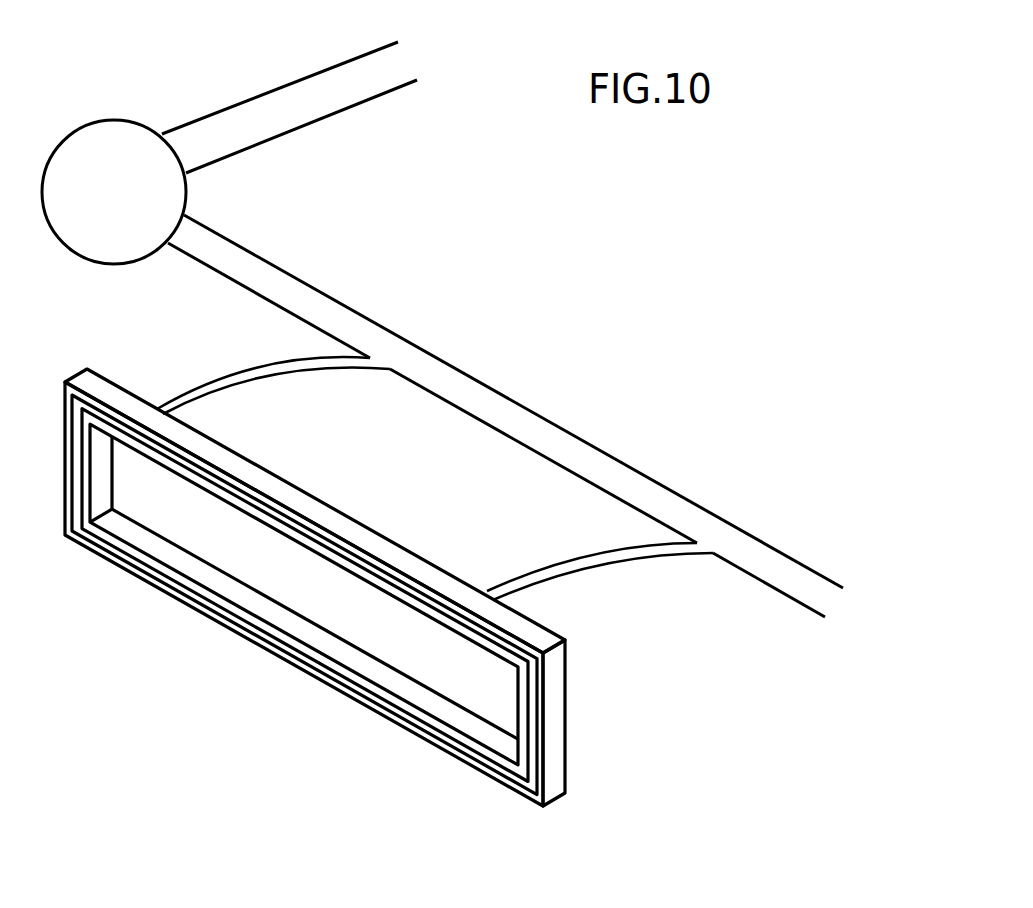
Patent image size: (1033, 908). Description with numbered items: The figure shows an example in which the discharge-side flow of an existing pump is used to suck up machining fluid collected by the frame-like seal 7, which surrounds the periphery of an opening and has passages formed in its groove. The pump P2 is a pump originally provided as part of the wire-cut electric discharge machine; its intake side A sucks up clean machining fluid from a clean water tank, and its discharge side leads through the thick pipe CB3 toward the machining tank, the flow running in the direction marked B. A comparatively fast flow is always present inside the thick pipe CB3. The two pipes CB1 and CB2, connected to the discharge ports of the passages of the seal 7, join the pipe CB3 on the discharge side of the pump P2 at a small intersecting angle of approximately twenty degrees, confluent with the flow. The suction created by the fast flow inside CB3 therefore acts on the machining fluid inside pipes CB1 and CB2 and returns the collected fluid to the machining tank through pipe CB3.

The seal 7 is at (357, 716).
The pump P2 is at (114, 192).
The pipe CB1 is at (277, 374).
The pipe CB2 is at (597, 562).
The thick pipe CB3 is at (607, 449).
The intake side A is at (356, 80).
The direction B is at (797, 580).